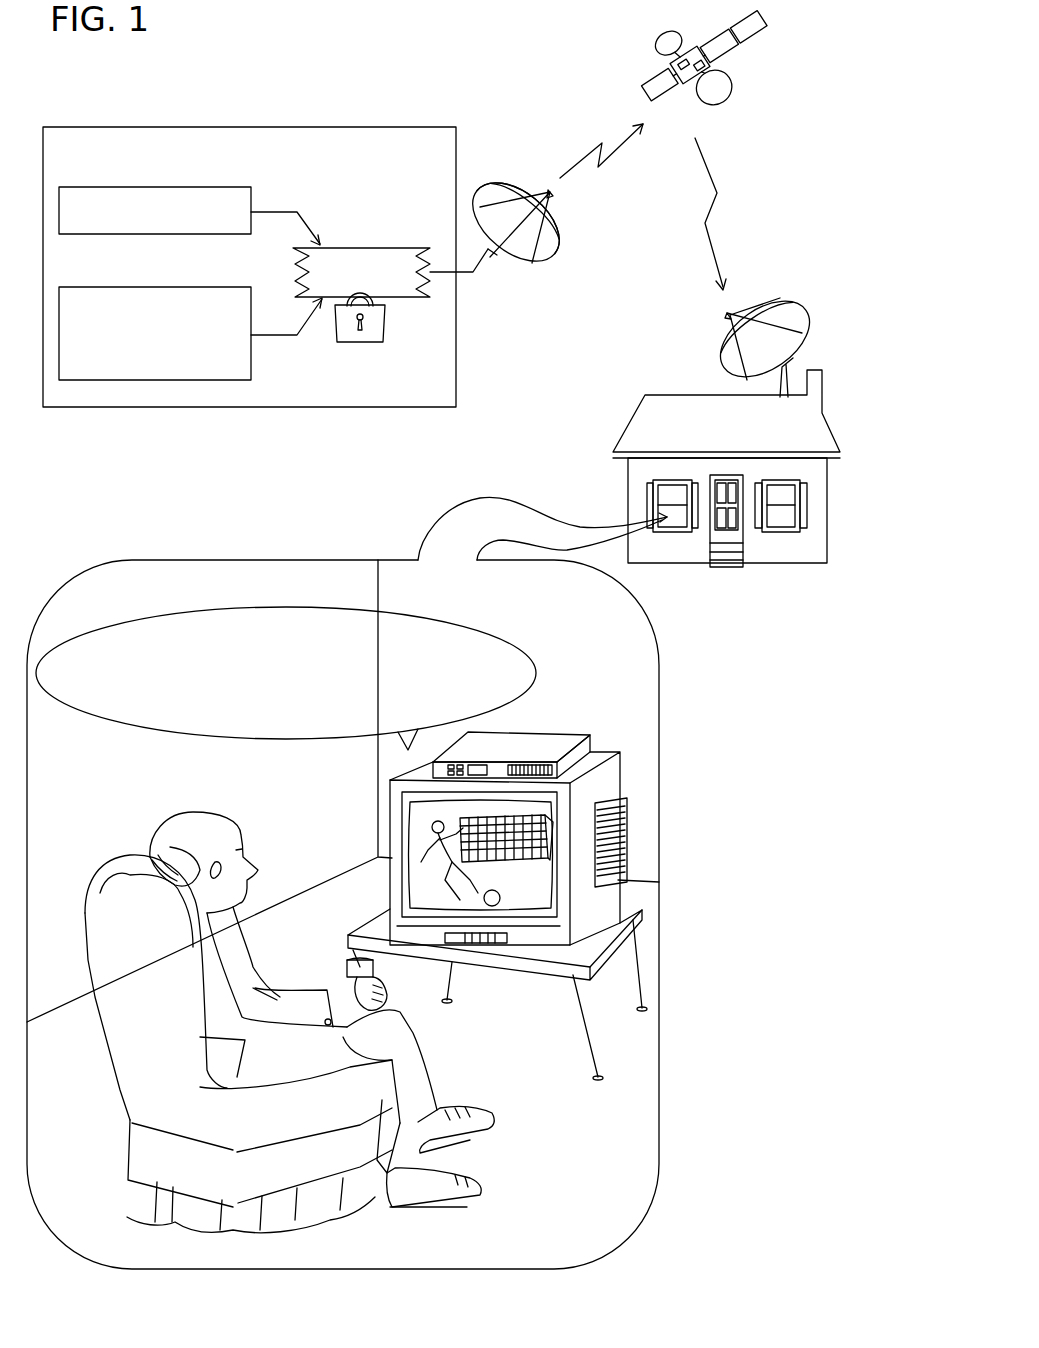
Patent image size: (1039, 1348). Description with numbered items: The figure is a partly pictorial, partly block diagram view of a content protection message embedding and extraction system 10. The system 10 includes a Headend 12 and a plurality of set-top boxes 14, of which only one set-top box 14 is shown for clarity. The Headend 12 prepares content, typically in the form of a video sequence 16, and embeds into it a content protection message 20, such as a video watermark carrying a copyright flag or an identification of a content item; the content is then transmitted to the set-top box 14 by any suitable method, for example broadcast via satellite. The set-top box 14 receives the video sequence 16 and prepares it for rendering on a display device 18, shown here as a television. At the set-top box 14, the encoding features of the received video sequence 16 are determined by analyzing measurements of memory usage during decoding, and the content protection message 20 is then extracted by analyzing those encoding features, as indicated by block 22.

The content protection message embedding and extraction system 10 is at (370, 43).
The Headend 12 is at (456, 362).
The set-top box 14 is at (563, 730).
The video sequence 16 is at (230, 187).
The display device 18 is at (618, 772).
The content protection message 20 is at (222, 380).
The extraction of content protection message based on decoder memory usage 22 is at (178, 607).